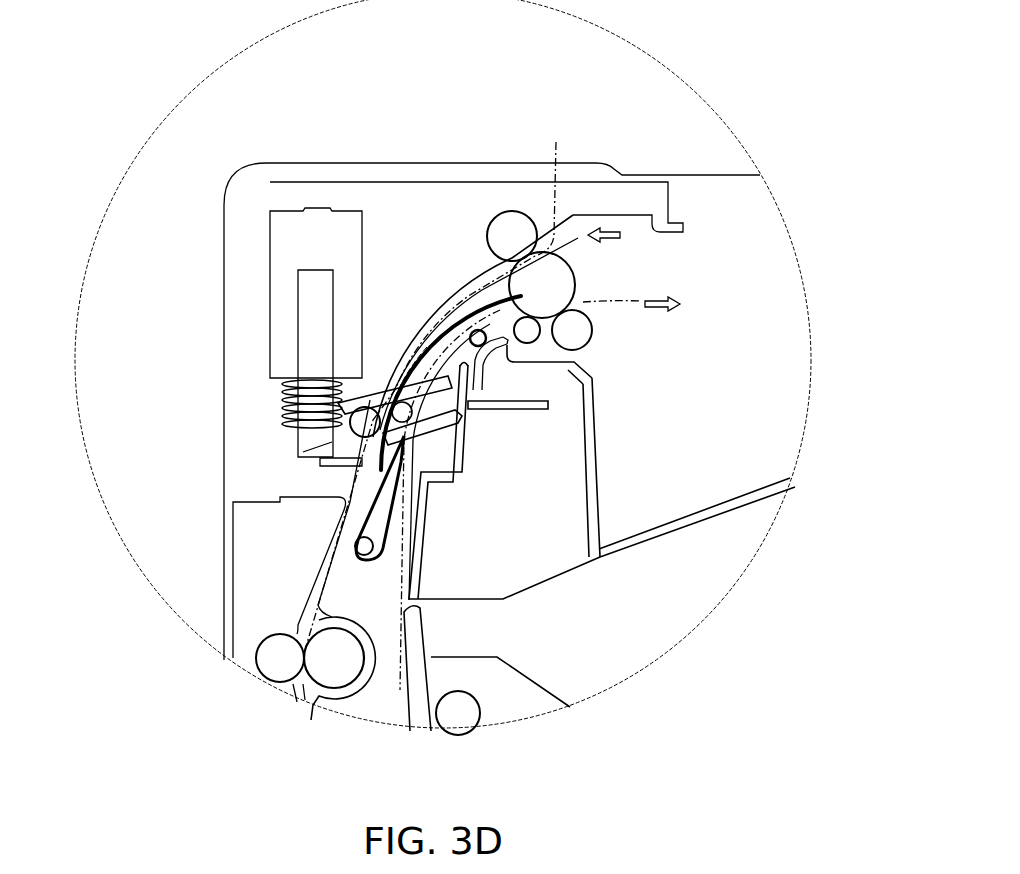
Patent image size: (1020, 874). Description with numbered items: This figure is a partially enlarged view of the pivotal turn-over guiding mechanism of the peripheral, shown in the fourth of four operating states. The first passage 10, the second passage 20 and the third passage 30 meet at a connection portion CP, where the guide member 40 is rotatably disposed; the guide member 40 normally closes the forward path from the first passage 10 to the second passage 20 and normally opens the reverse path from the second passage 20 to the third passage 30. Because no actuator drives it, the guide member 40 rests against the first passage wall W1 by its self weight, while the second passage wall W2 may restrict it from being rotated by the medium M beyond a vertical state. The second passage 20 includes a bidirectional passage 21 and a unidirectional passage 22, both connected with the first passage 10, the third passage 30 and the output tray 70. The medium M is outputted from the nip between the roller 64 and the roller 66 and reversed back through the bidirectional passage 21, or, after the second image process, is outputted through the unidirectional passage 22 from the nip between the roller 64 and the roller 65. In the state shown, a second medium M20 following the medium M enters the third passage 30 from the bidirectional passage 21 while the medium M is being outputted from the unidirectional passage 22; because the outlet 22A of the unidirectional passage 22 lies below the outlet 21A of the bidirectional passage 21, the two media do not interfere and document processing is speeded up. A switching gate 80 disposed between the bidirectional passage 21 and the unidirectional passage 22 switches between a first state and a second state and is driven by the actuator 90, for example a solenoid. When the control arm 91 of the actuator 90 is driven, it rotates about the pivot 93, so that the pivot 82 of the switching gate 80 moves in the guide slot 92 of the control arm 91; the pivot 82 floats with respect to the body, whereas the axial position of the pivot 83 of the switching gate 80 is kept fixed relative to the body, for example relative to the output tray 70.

The first passage 10 is at (412, 692).
The second passage 20 is at (773, 47).
The bidirectional passage 21 is at (462, 287).
The outlet of the bidirectional passage 21A is at (555, 250).
The unidirectional passage 22 is at (512, 345).
The outlet of the unidirectional passage 22A is at (577, 308).
The third passage 30 is at (307, 692).
The guide member 40 is at (400, 520).
The roller 64 is at (558, 280).
The roller 65 is at (582, 332).
The roller 66 is at (507, 217).
The output tray 70 is at (702, 522).
The switching gate 80 is at (435, 347).
The pivot 82 is at (410, 372).
The pivot 83 is at (497, 335).
The actuator 90 is at (335, 208).
The control arm 91 is at (445, 432).
The guide slot 92 is at (443, 405).
The pivot 93 is at (362, 420).
The connection portion CP is at (351, 483).
The medium M is at (380, 512).
The second medium M20 is at (445, 382).
The first passage wall W1 is at (425, 505).
The second passage wall W2 is at (350, 462).